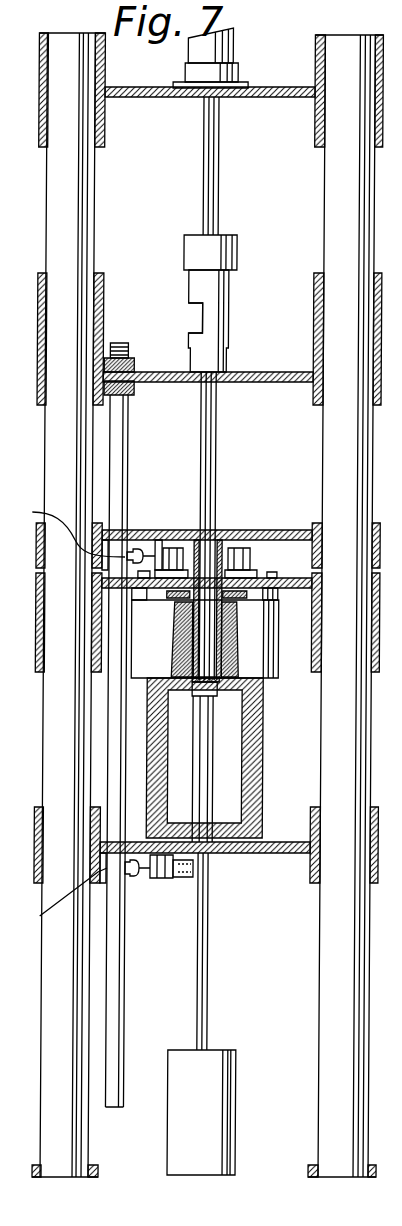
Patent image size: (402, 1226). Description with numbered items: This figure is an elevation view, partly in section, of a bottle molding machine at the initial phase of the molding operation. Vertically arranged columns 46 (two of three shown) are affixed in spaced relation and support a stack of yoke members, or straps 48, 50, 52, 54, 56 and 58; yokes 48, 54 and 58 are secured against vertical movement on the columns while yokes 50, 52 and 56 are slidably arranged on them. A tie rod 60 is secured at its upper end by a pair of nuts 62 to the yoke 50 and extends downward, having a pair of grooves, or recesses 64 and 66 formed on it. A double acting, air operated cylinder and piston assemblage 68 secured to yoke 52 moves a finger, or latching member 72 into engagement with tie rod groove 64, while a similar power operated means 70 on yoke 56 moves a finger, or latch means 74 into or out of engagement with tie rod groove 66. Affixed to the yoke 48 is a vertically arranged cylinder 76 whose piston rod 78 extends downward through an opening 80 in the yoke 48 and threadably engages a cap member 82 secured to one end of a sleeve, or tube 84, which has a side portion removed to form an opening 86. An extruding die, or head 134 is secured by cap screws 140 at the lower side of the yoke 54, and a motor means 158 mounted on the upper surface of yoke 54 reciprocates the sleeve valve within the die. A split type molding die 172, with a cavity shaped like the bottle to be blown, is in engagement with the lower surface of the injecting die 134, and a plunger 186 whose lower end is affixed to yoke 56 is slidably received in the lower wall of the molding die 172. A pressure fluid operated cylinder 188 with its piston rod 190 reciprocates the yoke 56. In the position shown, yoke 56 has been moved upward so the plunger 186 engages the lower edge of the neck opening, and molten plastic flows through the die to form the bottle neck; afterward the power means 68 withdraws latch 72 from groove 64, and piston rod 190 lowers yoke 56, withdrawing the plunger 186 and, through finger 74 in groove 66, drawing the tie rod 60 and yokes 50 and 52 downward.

The columns 46 is at (97, 217).
The yoke 48 is at (153, 97).
The yoke 50 is at (169, 382).
The yoke 52 is at (171, 538).
The yoke 54 is at (305, 590).
The yoke 56 is at (277, 858).
The yoke 58 is at (318, 1173).
The tie rod 60 is at (131, 438).
The nuts 62 is at (135, 361).
The tie rod groove 64 is at (70, 525).
The tie rod groove 66 is at (59, 891).
The power operated means 68 is at (160, 547).
The power operated means 70 is at (185, 878).
The latching member 72 is at (141, 549).
The latch means 74 is at (138, 877).
The cylinder 76 is at (234, 40).
The piston rod 78 is at (220, 160).
The opening 80 is at (222, 97).
The cap member 82 is at (238, 240).
The sleeve 84 is at (228, 291).
The opening 86 is at (191, 313).
The extruding die 134 is at (287, 680).
The cap screws 140 is at (285, 566).
The motor means 158 is at (203, 533).
The molding die 172 is at (267, 807).
The plunger 186 is at (215, 758).
The cylinder 188 is at (240, 1091).
The piston rod 190 is at (204, 990).